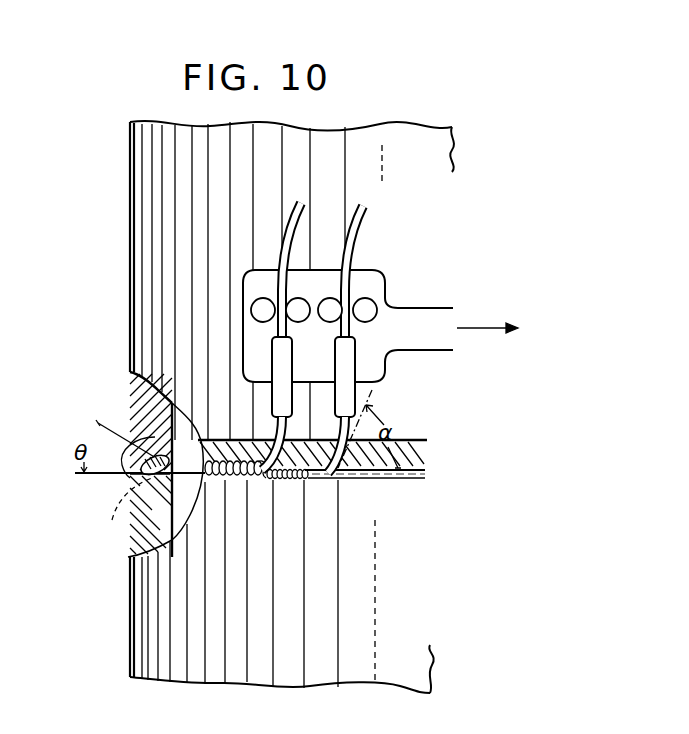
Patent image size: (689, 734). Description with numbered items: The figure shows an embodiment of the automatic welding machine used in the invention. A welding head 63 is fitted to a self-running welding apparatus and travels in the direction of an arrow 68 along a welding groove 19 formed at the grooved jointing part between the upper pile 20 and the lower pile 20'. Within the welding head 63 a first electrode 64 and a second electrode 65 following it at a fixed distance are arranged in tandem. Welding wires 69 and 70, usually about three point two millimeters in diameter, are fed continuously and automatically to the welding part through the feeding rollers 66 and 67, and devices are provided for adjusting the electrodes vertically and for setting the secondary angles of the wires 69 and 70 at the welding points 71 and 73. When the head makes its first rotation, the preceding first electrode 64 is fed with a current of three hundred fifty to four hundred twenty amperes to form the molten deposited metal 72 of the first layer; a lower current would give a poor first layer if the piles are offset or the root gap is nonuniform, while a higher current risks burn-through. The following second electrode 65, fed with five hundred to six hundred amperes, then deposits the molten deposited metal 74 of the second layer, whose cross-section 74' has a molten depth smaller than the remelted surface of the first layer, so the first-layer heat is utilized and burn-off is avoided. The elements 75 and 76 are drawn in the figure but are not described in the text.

The welding groove 19 is at (420, 478).
The upper pile 20 is at (266, 280).
The lower pile 20' is at (257, 586).
The welding head 63 is at (319, 270).
The first electrode 64 is at (335, 410).
The second electrode 65 is at (272, 406).
The feeding roller 66 is at (330, 298).
The feeding roller 67 is at (296, 298).
The arrow 68 is at (484, 326).
The wire 69 is at (364, 230).
The wire 70 is at (293, 238).
The welding point 71 is at (340, 480).
The molten deposited metal of first layer 72 is at (336, 496).
The welding point 73 is at (268, 478).
The molten deposited metal of second layer 74 is at (233, 491).
The cross-section of second layer bead 74' is at (143, 474).
The bead 75 is at (152, 456).
The surface 76 is at (105, 476).